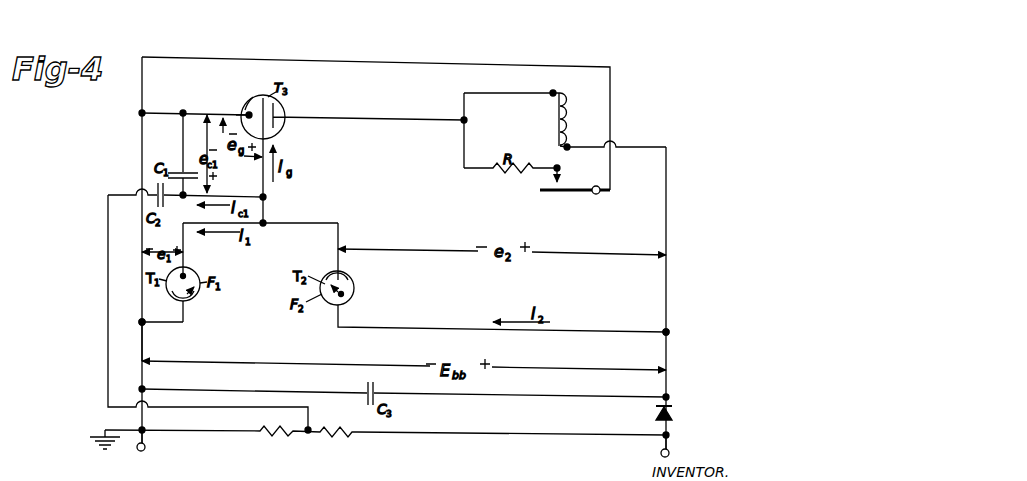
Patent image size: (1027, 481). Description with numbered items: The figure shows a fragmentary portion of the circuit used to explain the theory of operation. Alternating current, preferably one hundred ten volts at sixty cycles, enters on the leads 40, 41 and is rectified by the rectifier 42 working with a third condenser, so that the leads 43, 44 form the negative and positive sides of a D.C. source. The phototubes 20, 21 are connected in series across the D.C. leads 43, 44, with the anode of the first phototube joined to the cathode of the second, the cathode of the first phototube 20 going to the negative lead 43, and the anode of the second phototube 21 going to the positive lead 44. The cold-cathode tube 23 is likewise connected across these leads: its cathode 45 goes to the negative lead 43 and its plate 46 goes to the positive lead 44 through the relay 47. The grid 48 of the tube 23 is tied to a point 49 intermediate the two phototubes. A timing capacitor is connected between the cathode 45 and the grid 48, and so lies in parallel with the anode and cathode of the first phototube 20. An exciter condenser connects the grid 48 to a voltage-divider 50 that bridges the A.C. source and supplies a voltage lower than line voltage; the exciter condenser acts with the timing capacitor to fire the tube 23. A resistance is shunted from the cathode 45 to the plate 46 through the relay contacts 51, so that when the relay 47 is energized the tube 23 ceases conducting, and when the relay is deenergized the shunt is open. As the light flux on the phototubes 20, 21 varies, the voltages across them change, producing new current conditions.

The phototube 20 is at (195, 297).
The phototube 21 is at (354, 290).
The cold-cathode tube 23 is at (285, 104).
The lead 40 is at (146, 443).
The lead 41 is at (670, 447).
The rectifier 42 is at (672, 414).
The lead 43 is at (142, 343).
The lead 44 is at (666, 348).
The cathode 45 is at (247, 114).
The plate 46 is at (277, 110).
The relay 47 is at (568, 121).
The grid 48 is at (253, 97).
The point 49 is at (266, 222).
The voltage-divider 50 is at (337, 433).
The relay contacts 51 is at (538, 189).